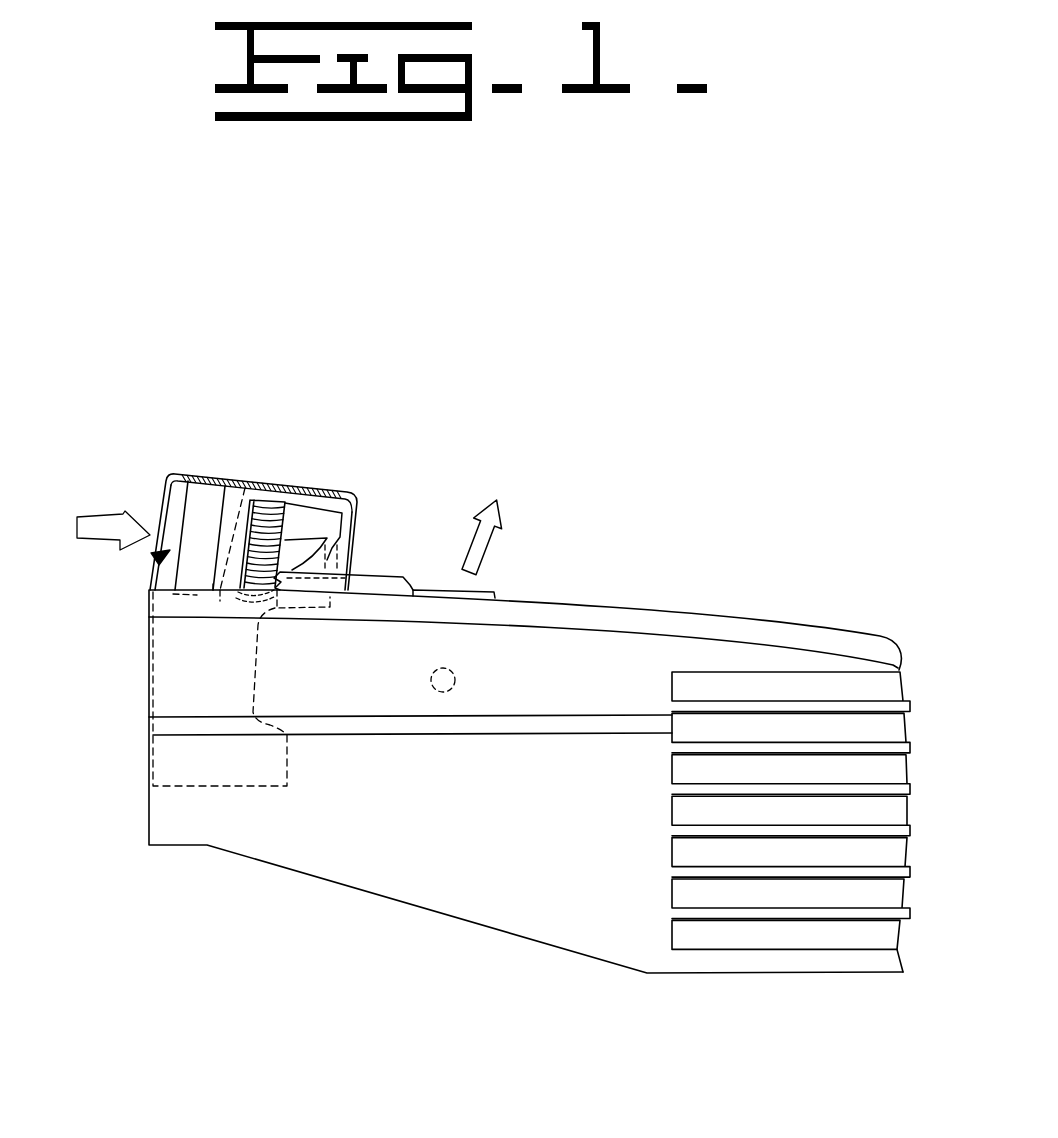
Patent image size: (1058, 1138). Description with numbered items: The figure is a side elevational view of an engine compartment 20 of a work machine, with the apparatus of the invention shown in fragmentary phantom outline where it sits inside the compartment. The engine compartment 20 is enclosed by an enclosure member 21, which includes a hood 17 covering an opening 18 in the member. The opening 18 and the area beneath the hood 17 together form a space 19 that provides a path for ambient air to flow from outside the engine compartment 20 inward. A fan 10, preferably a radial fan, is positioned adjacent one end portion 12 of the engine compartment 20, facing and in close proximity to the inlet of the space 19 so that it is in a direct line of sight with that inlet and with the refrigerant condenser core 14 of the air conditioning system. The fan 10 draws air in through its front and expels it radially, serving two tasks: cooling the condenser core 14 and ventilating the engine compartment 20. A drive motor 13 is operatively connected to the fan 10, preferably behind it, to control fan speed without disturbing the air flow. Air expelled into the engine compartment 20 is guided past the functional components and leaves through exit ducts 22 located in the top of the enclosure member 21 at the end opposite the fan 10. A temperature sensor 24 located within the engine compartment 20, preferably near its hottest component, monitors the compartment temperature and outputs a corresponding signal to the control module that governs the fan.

The fan 10 is at (272, 497).
The end portion 12 is at (148, 672).
The drive motor 13 is at (311, 517).
The refrigerant condenser core 14 is at (183, 512).
The hood 17 is at (358, 512).
The opening 18 is at (245, 488).
The space 19 is at (156, 558).
The engine compartment 20 is at (522, 757).
The enclosure member 21 is at (806, 621).
The exit ducts 22 is at (447, 590).
The temperature sensor 24 is at (456, 676).